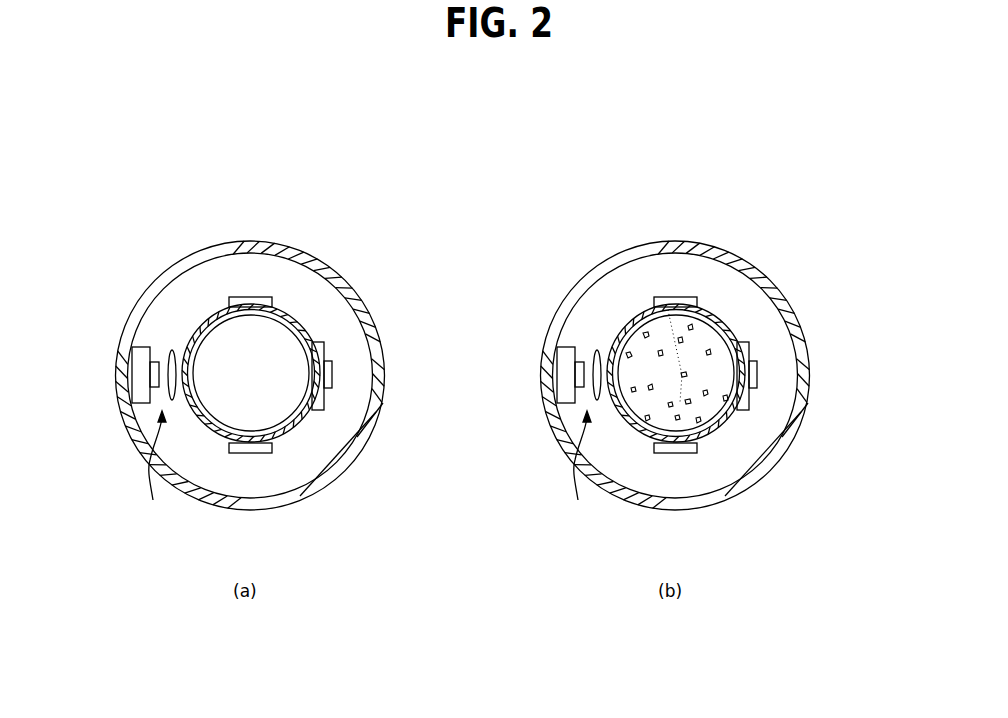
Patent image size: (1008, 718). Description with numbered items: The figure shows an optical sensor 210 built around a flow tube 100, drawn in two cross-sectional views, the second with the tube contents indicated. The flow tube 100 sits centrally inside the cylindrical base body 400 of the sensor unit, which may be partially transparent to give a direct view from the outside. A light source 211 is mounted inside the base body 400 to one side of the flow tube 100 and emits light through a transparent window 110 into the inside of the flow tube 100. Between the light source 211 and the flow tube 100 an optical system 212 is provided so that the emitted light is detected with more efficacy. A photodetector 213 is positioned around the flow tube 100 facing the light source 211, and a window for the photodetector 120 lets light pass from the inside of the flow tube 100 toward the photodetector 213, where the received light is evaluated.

The base body 400 is at (200, 252).
The flow tube 100 is at (210, 318).
The transparent window 110 is at (174, 404).
The window for the photodetector 120 is at (324, 392).
The optical sensor 210 is at (363, 467).
The light source 211 is at (138, 368).
The optical system 212 is at (170, 352).
The photodetector 213 is at (250, 297).